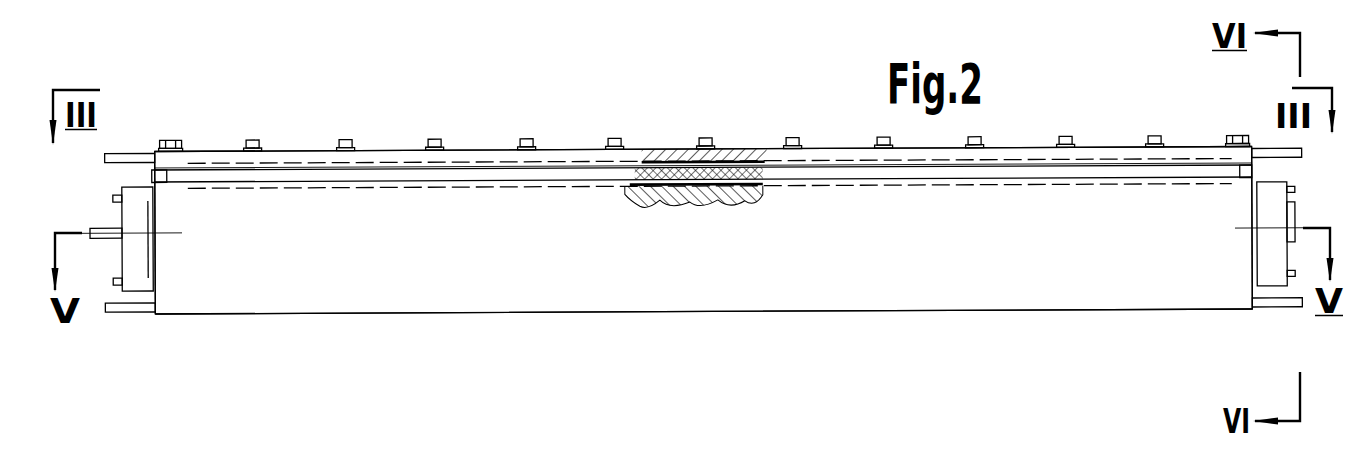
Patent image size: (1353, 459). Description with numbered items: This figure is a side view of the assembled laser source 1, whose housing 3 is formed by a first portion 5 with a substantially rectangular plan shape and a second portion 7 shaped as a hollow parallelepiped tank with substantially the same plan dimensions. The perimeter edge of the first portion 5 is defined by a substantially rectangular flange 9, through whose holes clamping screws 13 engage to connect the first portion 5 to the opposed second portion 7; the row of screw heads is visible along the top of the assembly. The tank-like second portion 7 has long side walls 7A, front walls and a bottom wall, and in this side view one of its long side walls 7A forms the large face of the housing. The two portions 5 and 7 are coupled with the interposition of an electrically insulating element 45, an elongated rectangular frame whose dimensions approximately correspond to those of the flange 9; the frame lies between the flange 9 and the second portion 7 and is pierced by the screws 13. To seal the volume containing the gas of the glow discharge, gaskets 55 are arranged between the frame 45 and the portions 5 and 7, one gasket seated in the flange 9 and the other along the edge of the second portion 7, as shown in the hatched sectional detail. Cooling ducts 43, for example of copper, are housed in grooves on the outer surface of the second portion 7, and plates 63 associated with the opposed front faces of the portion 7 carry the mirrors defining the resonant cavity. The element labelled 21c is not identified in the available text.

The laser source 1 is at (1033, 129).
The housing 3 is at (438, 216).
The first portion 5 is at (835, 144).
The second portion 7 is at (966, 290).
The long side walls 7A is at (788, 291).
The flange 9 is at (1105, 150).
The clamping screws 13 is at (527, 141).
The mounting flange 21c is at (127, 159).
The cooling ducts 43 is at (138, 309).
The electrically insulating element 45 is at (398, 176).
The gaskets 55 is at (732, 148).
The plates 63 is at (140, 258).